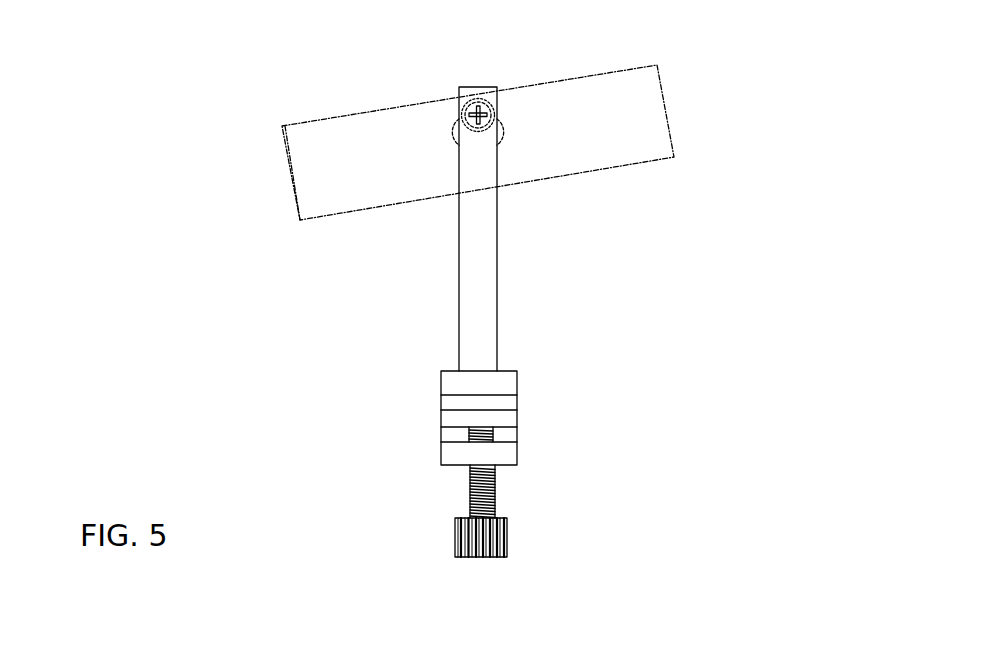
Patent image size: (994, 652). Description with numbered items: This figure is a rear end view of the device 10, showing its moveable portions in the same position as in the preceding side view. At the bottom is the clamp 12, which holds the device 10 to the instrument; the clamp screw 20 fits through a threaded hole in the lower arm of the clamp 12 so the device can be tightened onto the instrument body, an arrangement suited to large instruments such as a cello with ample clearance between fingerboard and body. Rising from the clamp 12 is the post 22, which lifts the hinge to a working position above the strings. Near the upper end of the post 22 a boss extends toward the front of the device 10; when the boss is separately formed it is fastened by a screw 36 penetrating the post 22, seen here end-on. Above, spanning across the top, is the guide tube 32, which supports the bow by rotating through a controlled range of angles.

The device 10 is at (683, 274).
The clamp 12 is at (505, 416).
The clamp screw 20 is at (470, 504).
The post 22 is at (472, 308).
The guide tube 32 is at (398, 127).
The screw 36 is at (485, 113).